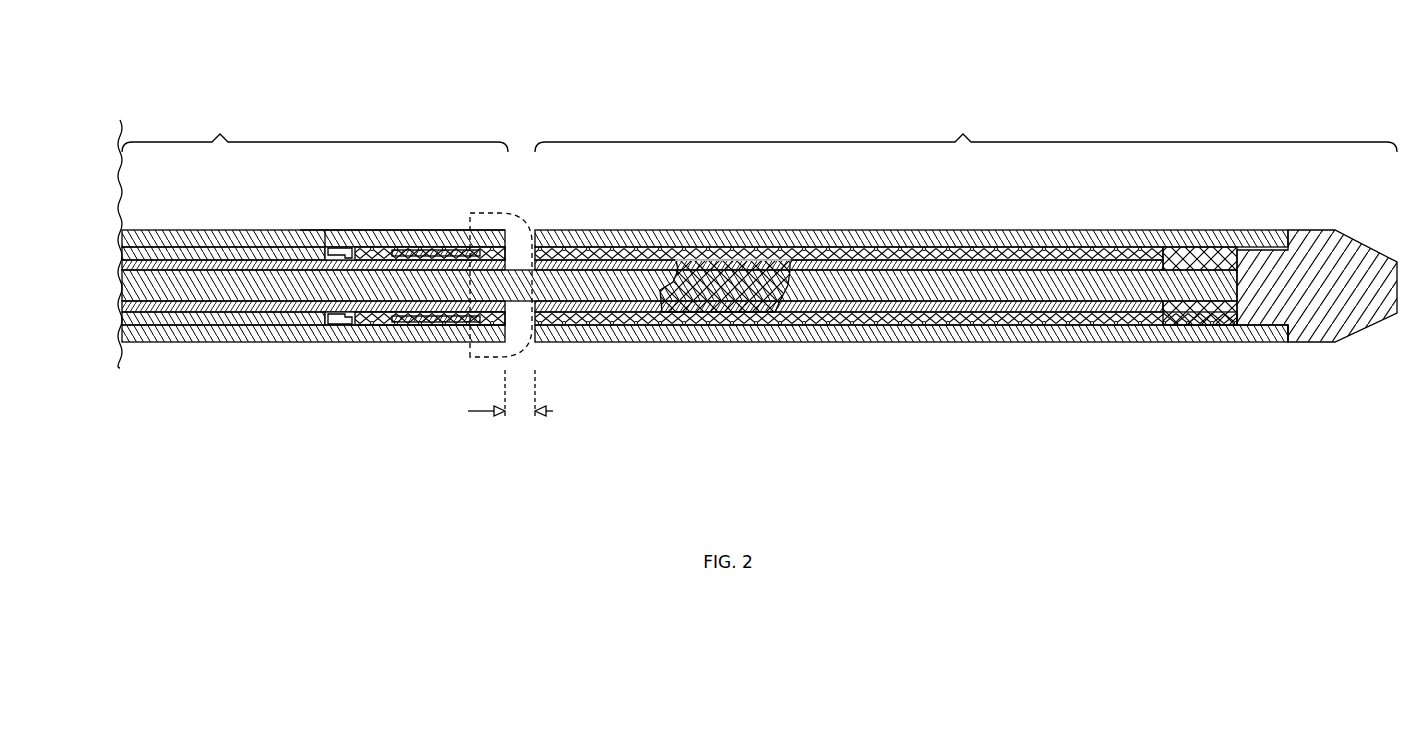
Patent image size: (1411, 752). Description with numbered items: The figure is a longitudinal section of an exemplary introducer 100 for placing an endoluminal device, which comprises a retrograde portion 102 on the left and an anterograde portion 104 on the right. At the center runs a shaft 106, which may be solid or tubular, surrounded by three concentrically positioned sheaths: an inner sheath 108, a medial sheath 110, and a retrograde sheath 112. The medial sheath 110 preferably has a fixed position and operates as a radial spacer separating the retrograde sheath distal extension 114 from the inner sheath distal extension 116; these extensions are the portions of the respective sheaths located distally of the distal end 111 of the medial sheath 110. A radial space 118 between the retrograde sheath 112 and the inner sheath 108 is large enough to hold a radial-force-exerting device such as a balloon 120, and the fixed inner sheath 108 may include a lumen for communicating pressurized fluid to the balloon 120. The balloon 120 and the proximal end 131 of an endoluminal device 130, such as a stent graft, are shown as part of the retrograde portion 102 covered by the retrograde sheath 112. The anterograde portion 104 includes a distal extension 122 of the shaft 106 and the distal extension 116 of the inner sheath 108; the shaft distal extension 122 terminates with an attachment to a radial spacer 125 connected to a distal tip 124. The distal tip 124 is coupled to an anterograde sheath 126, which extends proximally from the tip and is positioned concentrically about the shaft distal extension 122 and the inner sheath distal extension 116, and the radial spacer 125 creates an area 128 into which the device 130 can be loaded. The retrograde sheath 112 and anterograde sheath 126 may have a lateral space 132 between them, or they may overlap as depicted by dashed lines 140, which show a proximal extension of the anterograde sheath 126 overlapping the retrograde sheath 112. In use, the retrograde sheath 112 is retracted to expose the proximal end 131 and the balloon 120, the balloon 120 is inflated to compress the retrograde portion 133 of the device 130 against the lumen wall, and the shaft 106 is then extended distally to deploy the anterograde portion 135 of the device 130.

The introducer 100 is at (1152, 84).
The retrograde portion 102 is at (315, 131).
The anterograde portion 104 is at (966, 131).
The shaft 106 is at (135, 284).
The inner sheath 108 is at (122, 262).
The medial sheath 110 is at (122, 322).
The distal end of medial sheath 111 is at (336, 325).
The retrograde sheath 112 is at (178, 342).
The retrograde sheath distal extension 114 is at (346, 222).
The inner sheath distal extension 116 is at (500, 247).
The radial space 118 is at (348, 322).
The balloon 120 is at (434, 325).
The distal extension of shaft 122 is at (866, 300).
The distal tip 124 is at (1366, 342).
The radial spacer 125 is at (1262, 342).
The anterograde sheath 126 is at (1153, 342).
The area 128 is at (1196, 250).
The endoluminal device 130 is at (732, 312).
The proximal end of device 131 is at (303, 232).
The lateral space 132 is at (553, 411).
The retrograde portion of device 133 is at (425, 222).
The anterograde portion of device 135 is at (730, 222).
The dashed lines 140 is at (532, 222).